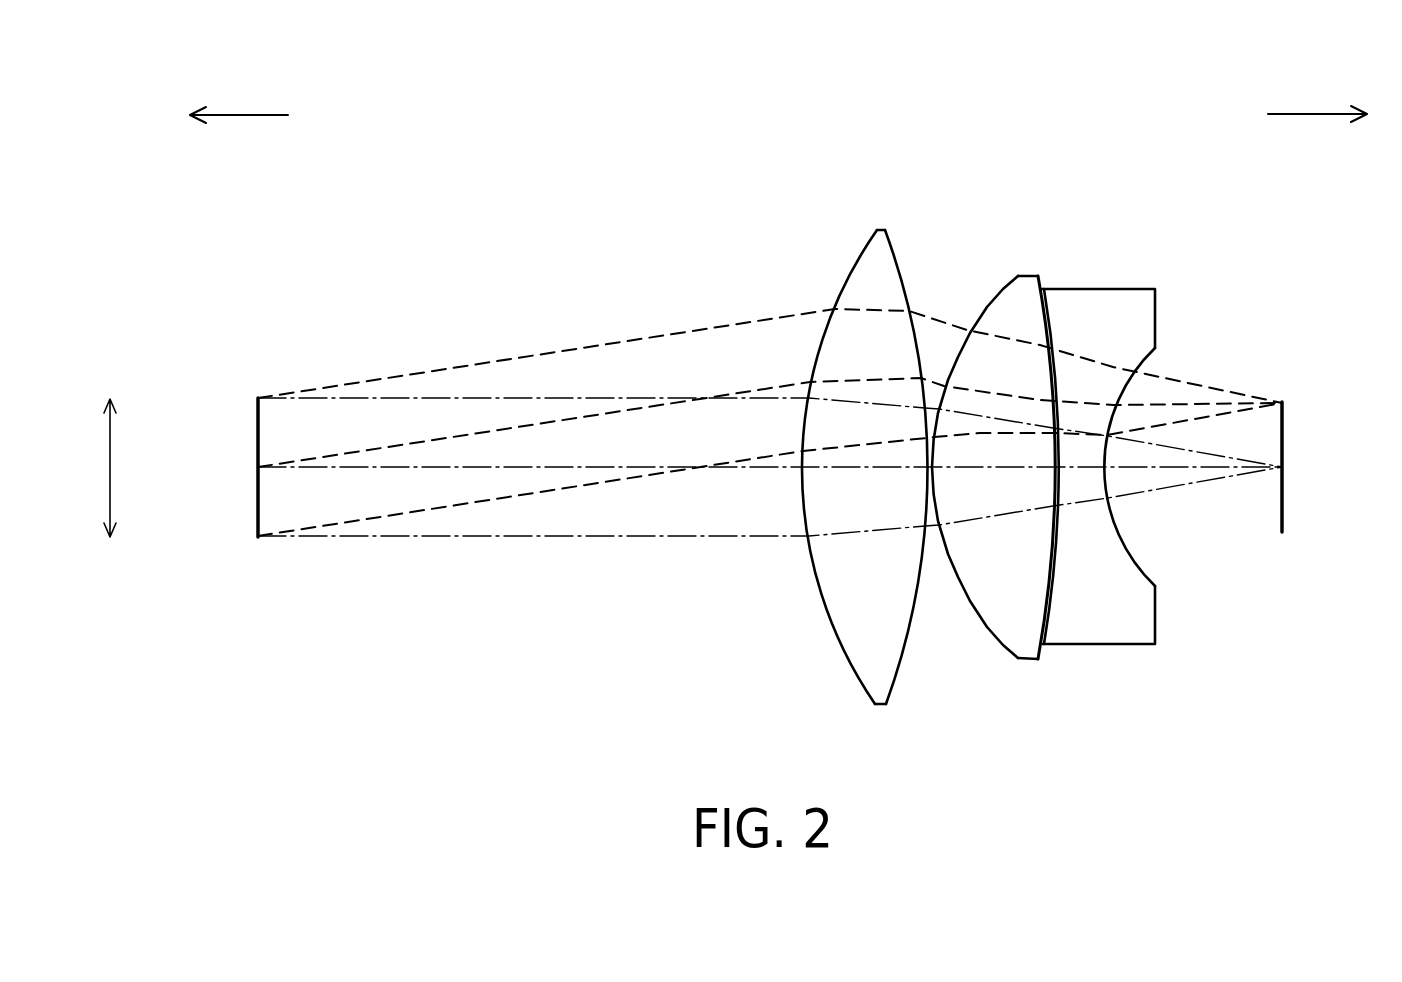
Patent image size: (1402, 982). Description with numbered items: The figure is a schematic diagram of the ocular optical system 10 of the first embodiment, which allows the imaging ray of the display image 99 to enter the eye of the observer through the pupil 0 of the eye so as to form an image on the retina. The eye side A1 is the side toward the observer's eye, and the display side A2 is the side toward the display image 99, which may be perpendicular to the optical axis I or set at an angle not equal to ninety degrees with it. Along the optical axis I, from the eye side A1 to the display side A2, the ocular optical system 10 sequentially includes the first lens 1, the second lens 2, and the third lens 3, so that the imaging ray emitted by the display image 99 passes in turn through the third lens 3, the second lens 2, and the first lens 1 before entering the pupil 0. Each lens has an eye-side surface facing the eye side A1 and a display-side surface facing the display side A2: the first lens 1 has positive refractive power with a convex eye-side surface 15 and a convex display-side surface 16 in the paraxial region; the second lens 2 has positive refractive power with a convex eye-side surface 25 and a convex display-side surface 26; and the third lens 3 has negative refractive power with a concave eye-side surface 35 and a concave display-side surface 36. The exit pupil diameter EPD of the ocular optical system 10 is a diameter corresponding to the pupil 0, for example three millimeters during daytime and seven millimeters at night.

The ocular optical system 10 is at (295, 284).
The first lens 1 is at (880, 228).
The eye-side surface of the first lens 15 is at (855, 257).
The display-side surface of the first lens 16 is at (903, 280).
The second lens 2 is at (1024, 275).
The eye-side surface of the second lens 25 is at (984, 298).
The display-side surface of the second lens 26 is at (1043, 293).
The third lens 3 is at (1128, 288).
The eye-side surface of the third lens 35 is at (1048, 342).
The display-side surface of the third lens 36 is at (1148, 357).
The display image 99 is at (1283, 423).
The pupil 0 is at (258, 398).
The optical axis I is at (302, 467).
The exit pupil diameter EPD is at (131, 468).
The eye side A1 is at (239, 97).
The display side A2 is at (1317, 97).